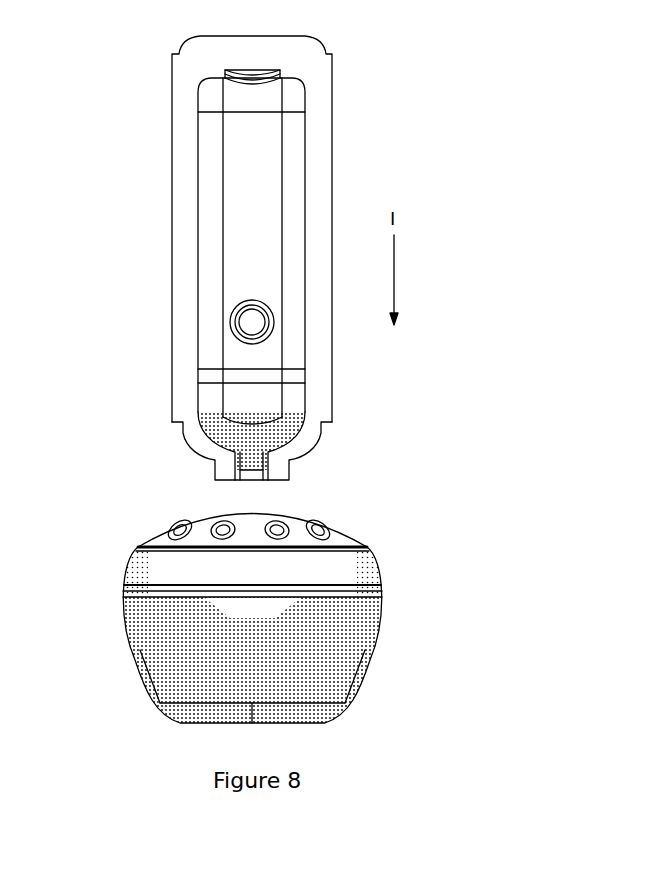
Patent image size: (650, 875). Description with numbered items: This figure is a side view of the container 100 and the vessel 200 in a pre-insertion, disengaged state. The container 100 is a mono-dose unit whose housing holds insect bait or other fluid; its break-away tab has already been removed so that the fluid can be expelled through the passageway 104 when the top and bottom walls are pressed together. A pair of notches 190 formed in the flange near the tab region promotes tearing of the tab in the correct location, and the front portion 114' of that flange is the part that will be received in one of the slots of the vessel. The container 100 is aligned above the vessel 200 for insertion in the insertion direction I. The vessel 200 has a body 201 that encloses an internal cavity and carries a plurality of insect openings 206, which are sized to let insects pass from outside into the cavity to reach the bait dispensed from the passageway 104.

The container 100 is at (426, 85).
The passageway 104 is at (215, 462).
The front portion of the flange 114' is at (306, 275).
The notches 190 is at (304, 482).
The vessel 200 is at (391, 537).
The body 201 is at (325, 685).
The insect openings 206 is at (158, 520).